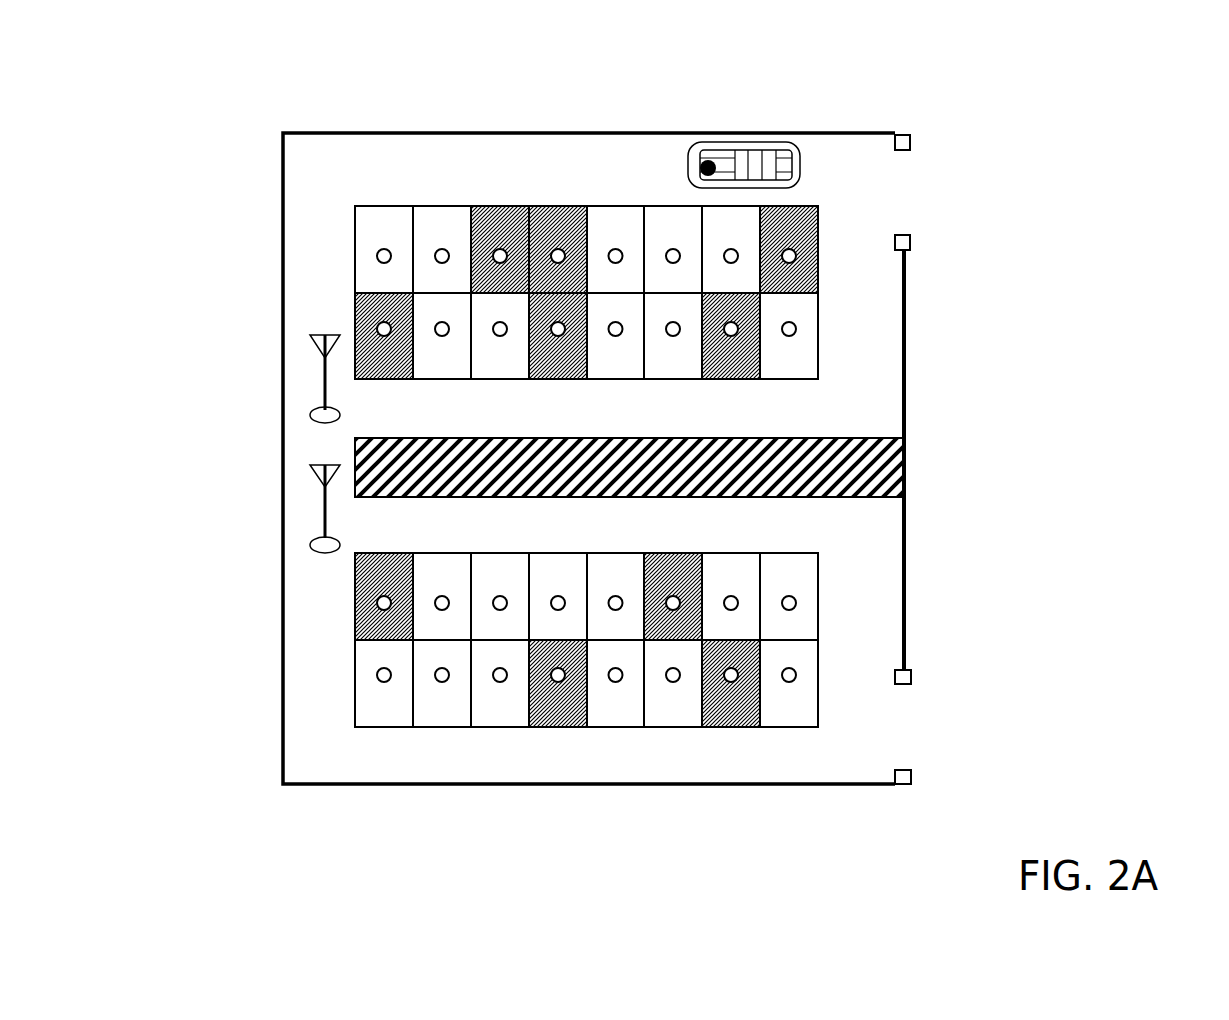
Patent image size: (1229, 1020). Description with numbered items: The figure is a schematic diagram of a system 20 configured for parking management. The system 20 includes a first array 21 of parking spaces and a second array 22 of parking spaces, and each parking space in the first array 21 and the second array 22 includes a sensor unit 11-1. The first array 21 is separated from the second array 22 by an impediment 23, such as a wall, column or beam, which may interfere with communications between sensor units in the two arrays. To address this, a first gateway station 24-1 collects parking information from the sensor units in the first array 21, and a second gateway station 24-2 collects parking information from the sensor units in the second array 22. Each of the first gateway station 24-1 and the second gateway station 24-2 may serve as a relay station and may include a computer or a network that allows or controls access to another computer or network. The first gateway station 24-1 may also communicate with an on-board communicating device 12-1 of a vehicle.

The system 20 is at (1109, 138).
The first array 21 is at (817, 295).
The second array 22 is at (817, 640).
The driving lane 23 is at (893, 463).
The first gateway station 24-1 is at (317, 412).
The second gateway station 24-2 is at (317, 540).
The sensor unit 11-1 is at (378, 249).
The communicating device 12-1 is at (705, 163).